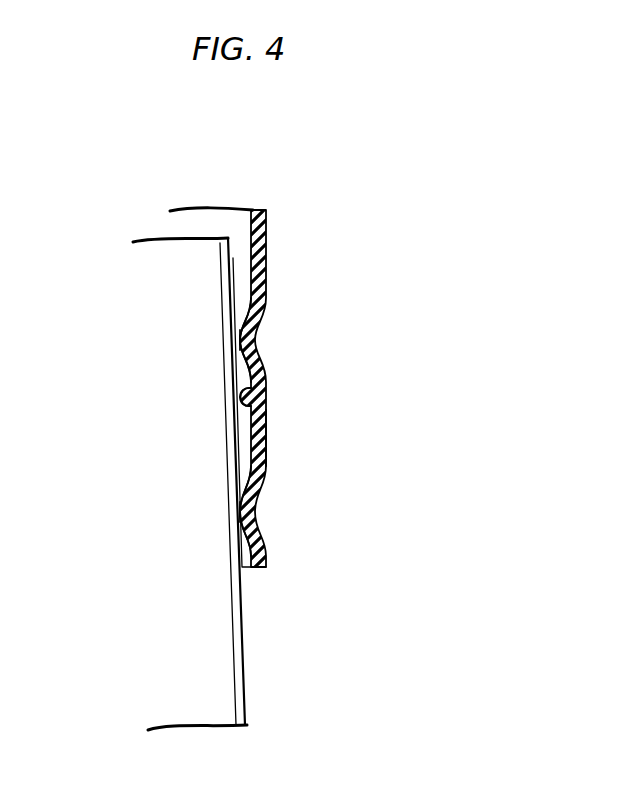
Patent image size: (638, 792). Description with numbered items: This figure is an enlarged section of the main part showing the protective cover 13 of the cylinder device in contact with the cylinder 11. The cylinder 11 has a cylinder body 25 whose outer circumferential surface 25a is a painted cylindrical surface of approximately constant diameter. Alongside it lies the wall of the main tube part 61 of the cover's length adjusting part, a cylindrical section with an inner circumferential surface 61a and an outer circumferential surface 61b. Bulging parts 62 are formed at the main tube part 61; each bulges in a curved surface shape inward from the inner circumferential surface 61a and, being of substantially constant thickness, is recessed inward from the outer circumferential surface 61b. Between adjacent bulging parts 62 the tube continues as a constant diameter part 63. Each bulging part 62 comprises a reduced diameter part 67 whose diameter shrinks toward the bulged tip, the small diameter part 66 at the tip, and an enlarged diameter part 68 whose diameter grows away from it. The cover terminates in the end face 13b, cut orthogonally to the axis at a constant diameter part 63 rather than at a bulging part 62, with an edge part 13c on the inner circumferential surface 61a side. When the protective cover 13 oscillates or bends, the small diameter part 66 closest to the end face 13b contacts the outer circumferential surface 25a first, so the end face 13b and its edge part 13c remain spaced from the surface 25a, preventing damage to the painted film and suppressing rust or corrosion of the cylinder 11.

The cylinder 11 is at (237, 249).
The protective cover 13 is at (357, 232).
The end face 13b is at (255, 570).
The edge part 13c is at (247, 572).
The cylinder body 25 is at (233, 273).
The outer circumferential surface 25a is at (232, 285).
The main tube part 61 is at (267, 223).
The inner circumferential surface 61a is at (265, 406).
The outer circumferential surface 61b is at (267, 393).
The bulging part 62 is at (243, 320).
The constant diameter part 63 is at (267, 432).
The small diameter part 66 is at (240, 338).
The reduced diameter part 67 is at (247, 313).
The enlarged diameter part 68 is at (243, 367).